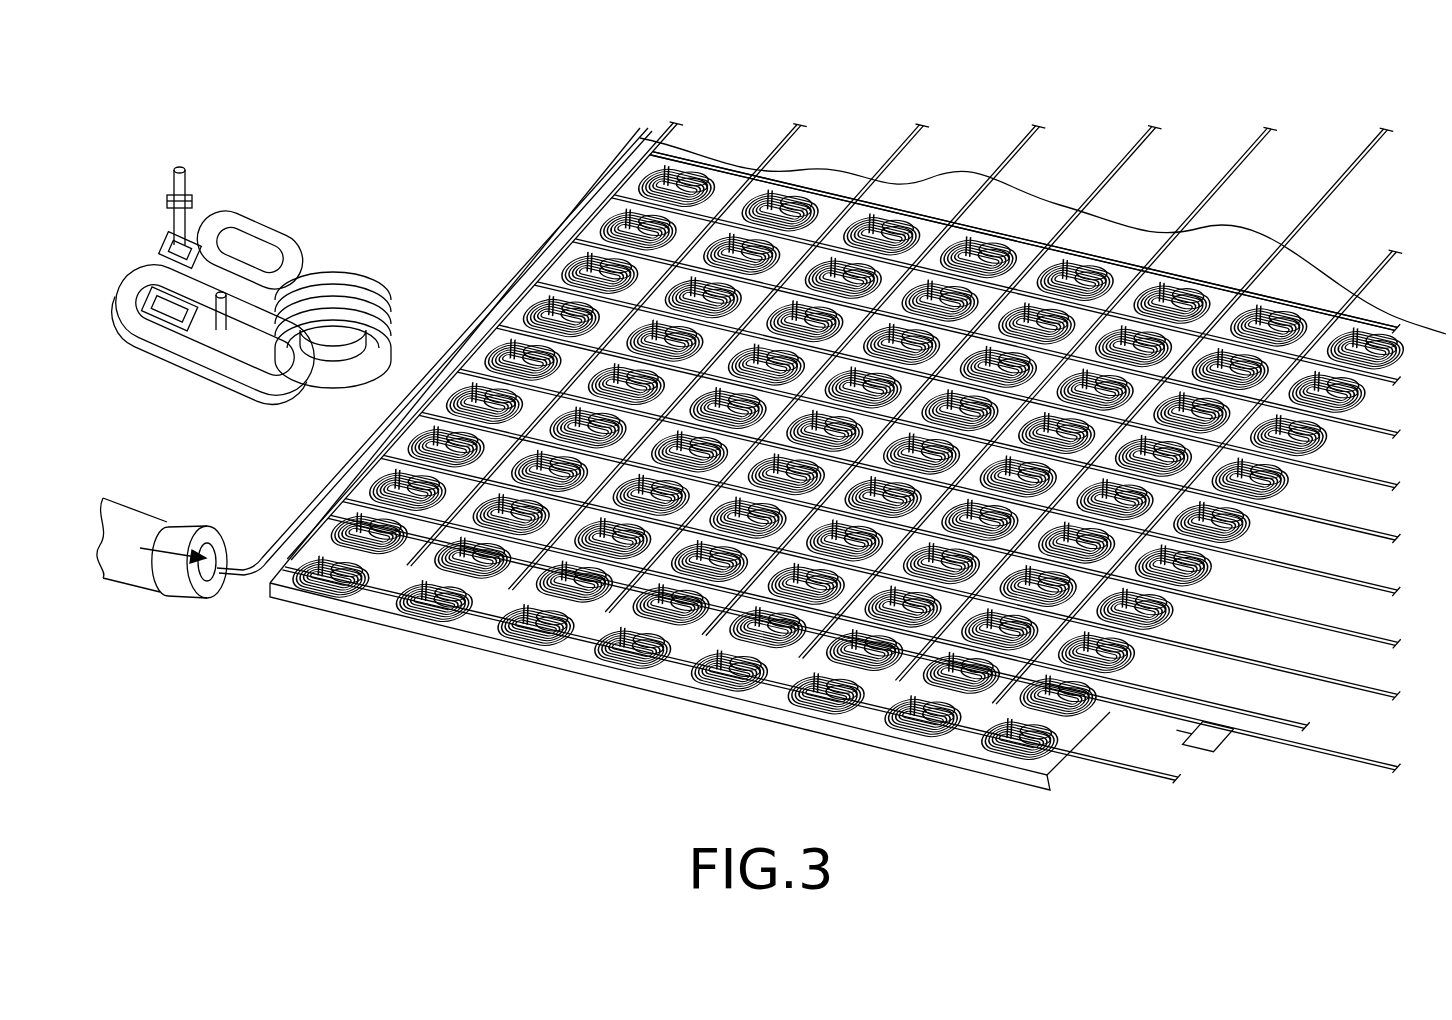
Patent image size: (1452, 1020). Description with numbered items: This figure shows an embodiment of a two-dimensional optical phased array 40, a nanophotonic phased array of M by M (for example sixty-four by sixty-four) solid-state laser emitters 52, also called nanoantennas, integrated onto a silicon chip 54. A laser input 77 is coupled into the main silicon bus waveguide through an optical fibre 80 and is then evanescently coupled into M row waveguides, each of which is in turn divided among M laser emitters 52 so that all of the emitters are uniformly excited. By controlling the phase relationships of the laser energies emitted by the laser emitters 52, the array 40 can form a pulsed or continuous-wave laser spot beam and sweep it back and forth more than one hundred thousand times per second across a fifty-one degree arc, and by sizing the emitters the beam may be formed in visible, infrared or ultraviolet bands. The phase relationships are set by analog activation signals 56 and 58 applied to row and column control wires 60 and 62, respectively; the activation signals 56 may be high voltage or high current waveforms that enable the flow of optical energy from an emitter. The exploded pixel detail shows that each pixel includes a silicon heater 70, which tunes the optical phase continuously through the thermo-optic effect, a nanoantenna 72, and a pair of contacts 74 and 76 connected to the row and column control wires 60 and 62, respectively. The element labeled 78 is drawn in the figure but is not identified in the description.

The optical phased array 40 is at (1292, 94).
The laser emitter 52 is at (712, 156).
The silicon chip 54 is at (985, 775).
The analog activation signal 56 is at (1232, 745).
The analog activation signal 58 is at (990, 162).
The row control wire 60 is at (1288, 780).
The column control wire 62 is at (885, 150).
The Si heater 70 is at (140, 268).
The nanoantenna 72 is at (388, 268).
The contact 74 is at (173, 178).
The contact 76 is at (275, 252).
The laser input 77 is at (140, 565).
The rail 78 is at (1393, 775).
The optical fibre 80 is at (183, 598).